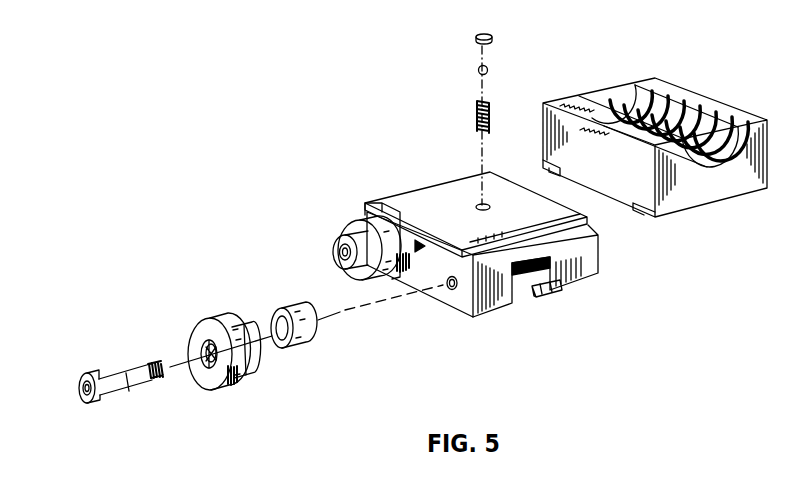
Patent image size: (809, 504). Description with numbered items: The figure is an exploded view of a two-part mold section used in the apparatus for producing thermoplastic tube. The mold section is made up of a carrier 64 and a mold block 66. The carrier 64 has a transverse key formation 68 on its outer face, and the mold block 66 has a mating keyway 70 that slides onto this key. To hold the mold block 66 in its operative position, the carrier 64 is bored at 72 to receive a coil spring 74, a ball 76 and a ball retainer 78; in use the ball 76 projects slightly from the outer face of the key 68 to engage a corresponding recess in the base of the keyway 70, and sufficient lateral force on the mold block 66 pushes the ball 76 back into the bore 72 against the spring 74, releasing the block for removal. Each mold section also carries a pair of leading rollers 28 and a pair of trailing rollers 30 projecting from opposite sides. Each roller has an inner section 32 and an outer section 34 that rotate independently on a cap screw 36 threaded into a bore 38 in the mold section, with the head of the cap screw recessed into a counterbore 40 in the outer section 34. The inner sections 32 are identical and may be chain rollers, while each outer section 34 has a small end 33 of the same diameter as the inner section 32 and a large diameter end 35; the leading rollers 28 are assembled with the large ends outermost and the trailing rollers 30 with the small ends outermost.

The leading rollers 28 is at (209, 365).
The trailing rollers 30 is at (297, 300).
The inner section 32 is at (394, 250).
The small end 33 is at (337, 248).
The outer section 34 is at (342, 227).
The large diameter end 35 is at (397, 273).
The cap screw 36 is at (133, 387).
The bore 38 is at (450, 290).
The counterbore 40 is at (208, 346).
The carrier 64 is at (584, 264).
The mold block 66 is at (713, 189).
The key formation 68 is at (458, 181).
The keyway 70 is at (613, 203).
The bore 72 is at (548, 297).
The coil spring 74 is at (490, 119).
The ball 76 is at (477, 69).
The ball retainer 78 is at (486, 34).